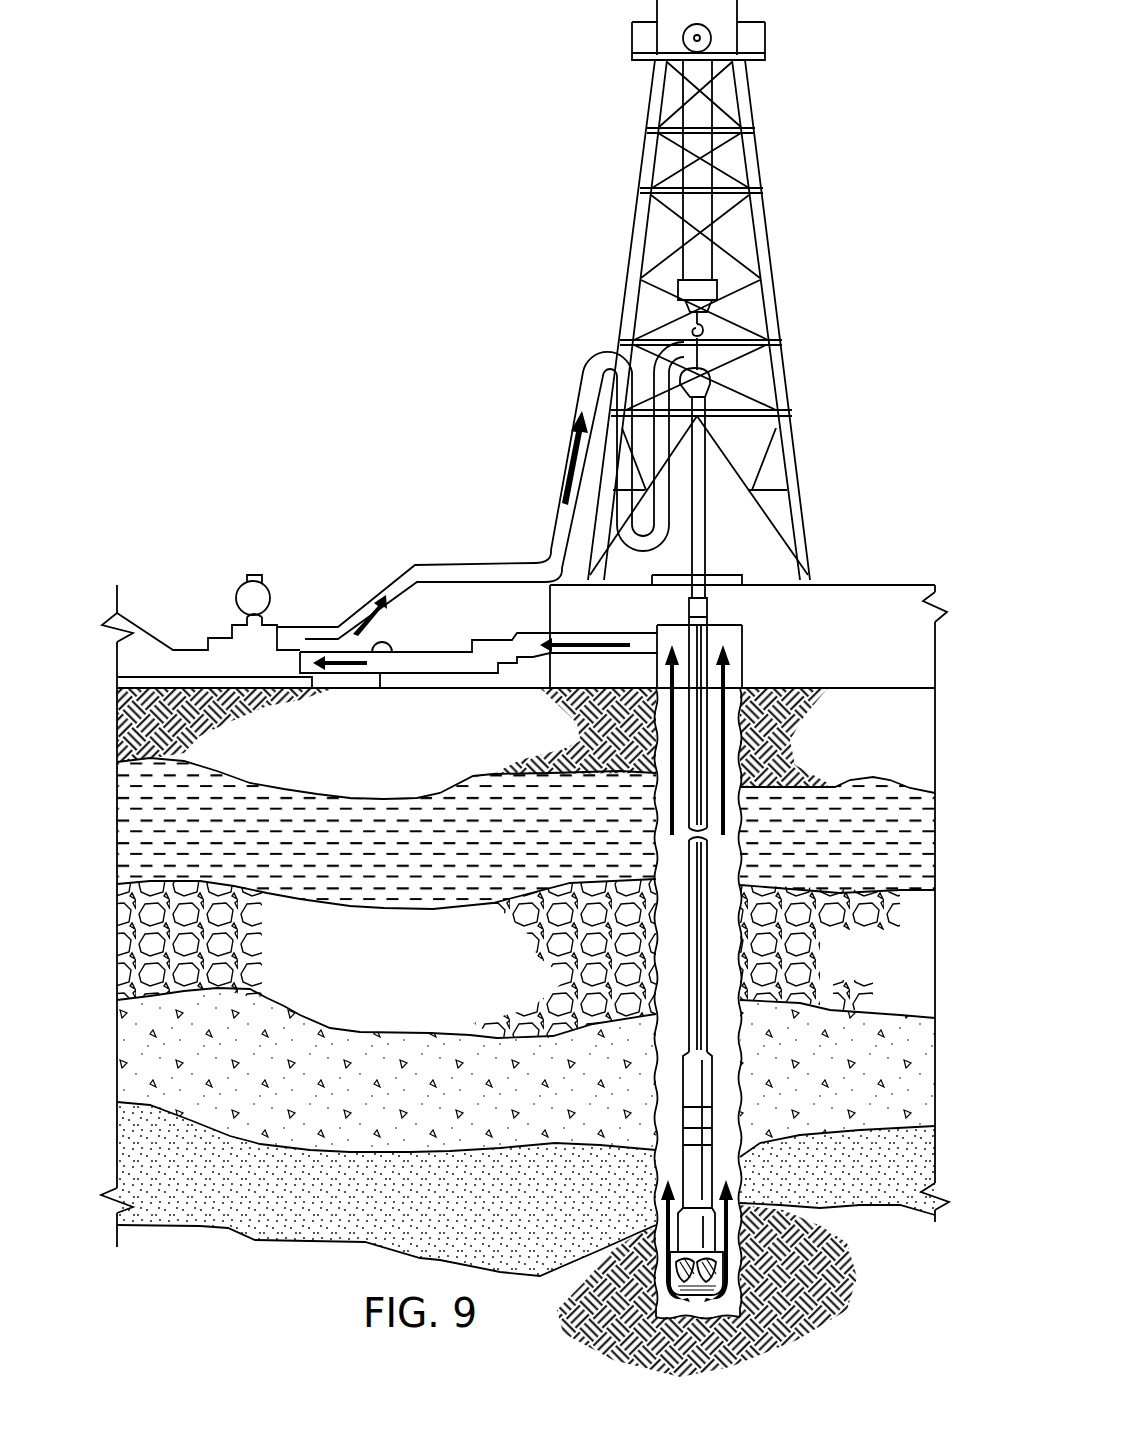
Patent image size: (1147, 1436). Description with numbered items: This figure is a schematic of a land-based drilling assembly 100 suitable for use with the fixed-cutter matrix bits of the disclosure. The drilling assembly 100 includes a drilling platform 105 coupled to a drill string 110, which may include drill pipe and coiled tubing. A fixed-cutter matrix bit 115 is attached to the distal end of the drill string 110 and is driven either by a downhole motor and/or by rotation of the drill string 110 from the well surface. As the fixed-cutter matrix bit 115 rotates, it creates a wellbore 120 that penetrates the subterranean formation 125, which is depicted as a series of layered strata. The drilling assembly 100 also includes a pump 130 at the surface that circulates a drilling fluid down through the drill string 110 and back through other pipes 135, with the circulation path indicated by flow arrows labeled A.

The drilling assembly 100 is at (566, 234).
The drilling platform 105 is at (826, 569).
The drill string 110 is at (712, 607).
The fixed-cutter matrix bit 115 is at (737, 1258).
The wellbore 120 is at (742, 1080).
The subterranean formation 125 is at (236, 1268).
The pump 130 is at (224, 624).
The pipes 135 is at (477, 562).